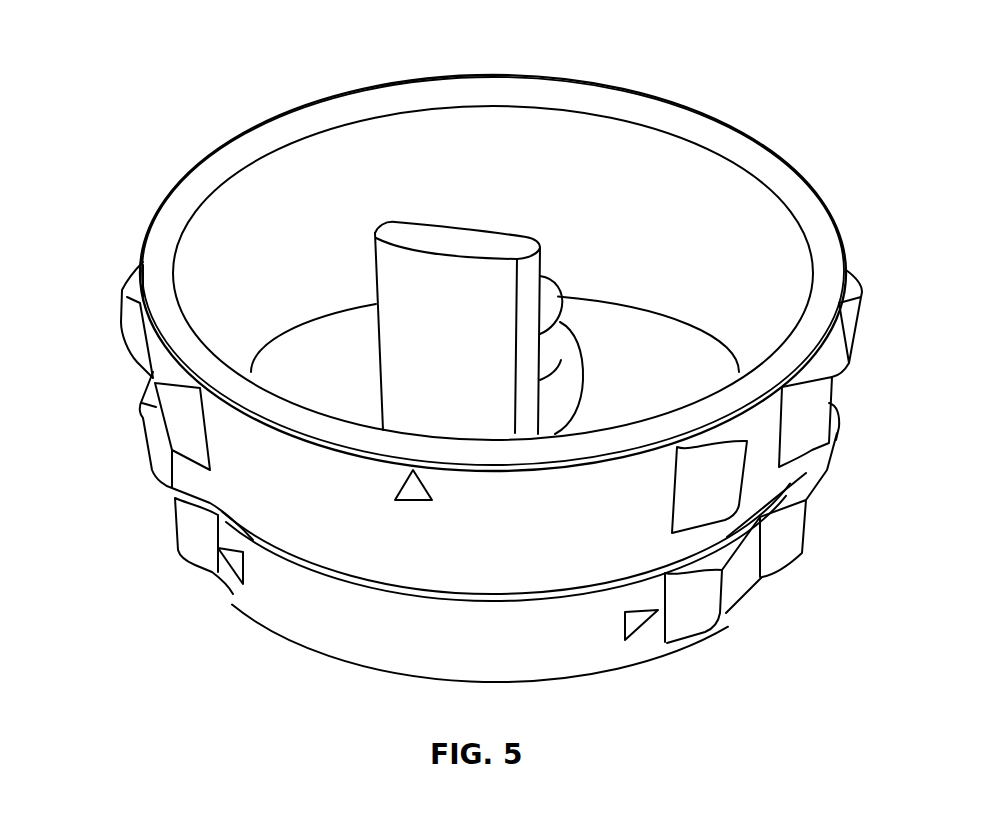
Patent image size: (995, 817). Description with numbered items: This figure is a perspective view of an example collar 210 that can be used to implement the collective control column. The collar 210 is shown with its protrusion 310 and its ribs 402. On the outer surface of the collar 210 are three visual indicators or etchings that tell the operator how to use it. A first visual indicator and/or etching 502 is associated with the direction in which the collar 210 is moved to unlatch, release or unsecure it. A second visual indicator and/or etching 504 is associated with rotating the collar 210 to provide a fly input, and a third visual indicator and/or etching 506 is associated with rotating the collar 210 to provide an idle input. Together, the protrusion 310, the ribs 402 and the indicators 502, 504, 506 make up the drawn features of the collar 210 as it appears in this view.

The collar 210 is at (250, 52).
The protrusion 310 is at (403, 388).
The ribs 402 is at (130, 320).
The first visual indicator and/or etching 502 is at (392, 566).
The second visual indicator and/or etching 504 is at (251, 591).
The third visual indicator and/or etching 506 is at (567, 652).